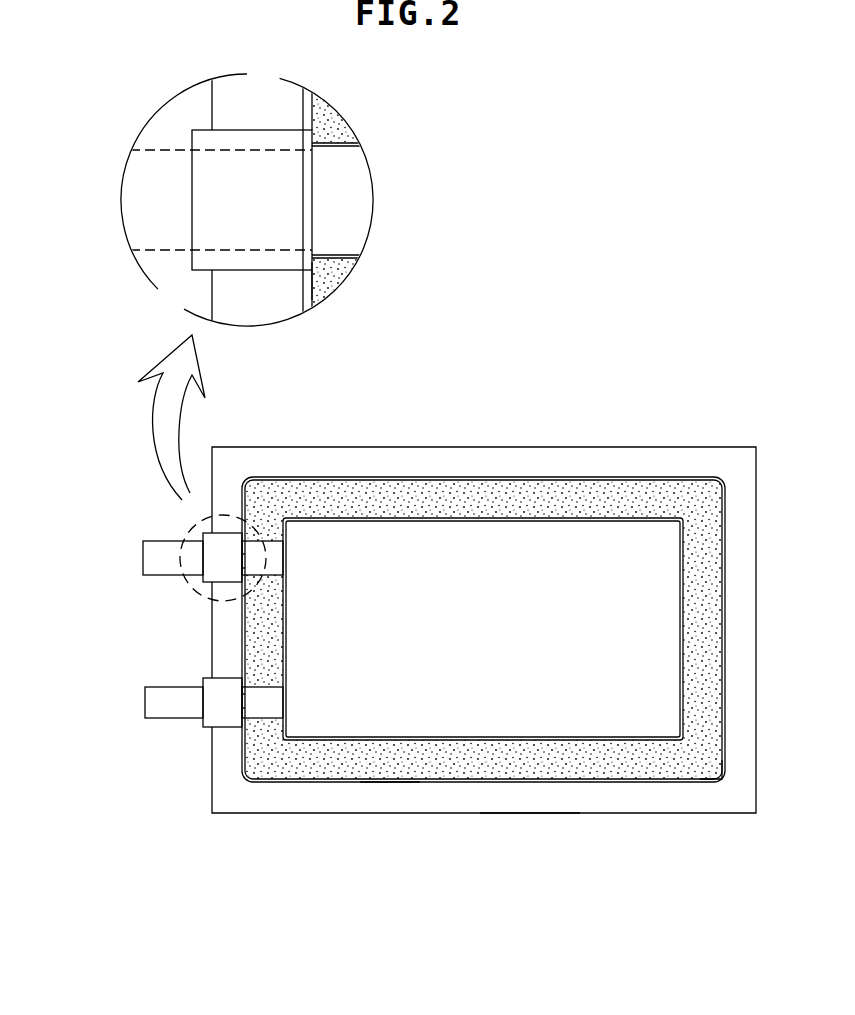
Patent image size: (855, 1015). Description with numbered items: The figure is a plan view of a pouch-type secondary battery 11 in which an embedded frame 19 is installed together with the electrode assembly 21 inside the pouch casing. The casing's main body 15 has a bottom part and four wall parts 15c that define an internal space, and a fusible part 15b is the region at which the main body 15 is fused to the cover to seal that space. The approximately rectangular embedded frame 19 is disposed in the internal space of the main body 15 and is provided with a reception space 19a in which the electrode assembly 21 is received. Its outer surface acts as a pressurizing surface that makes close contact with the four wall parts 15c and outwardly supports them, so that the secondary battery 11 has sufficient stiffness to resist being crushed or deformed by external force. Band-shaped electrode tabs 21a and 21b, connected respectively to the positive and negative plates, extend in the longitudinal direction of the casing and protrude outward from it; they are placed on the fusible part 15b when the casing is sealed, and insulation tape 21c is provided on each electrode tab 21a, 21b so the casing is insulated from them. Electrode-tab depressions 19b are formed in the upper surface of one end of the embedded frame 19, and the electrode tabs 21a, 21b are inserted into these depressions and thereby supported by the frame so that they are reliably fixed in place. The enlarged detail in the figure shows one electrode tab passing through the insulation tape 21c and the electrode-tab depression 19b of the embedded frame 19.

The secondary battery 11 is at (582, 413).
The main body 15 is at (597, 817).
The fusible part 15b is at (525, 797).
The wall parts 15c is at (645, 783).
The embedded frame 19 is at (335, 786).
The reception space 19a is at (407, 740).
The electrode-tab depressions 19b is at (330, 257).
The electrode assembly 21 is at (456, 745).
The electrode tab 21a is at (140, 192).
The electrode tab 21b is at (150, 702).
The insulation tape 21c is at (227, 720).